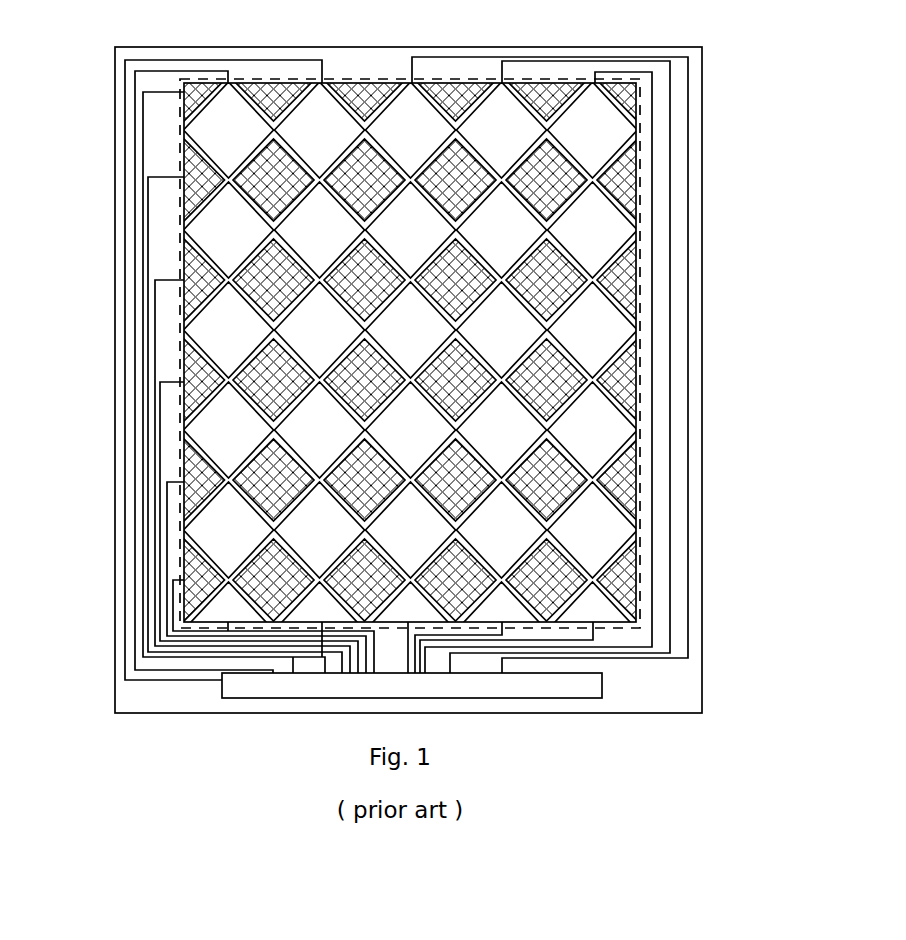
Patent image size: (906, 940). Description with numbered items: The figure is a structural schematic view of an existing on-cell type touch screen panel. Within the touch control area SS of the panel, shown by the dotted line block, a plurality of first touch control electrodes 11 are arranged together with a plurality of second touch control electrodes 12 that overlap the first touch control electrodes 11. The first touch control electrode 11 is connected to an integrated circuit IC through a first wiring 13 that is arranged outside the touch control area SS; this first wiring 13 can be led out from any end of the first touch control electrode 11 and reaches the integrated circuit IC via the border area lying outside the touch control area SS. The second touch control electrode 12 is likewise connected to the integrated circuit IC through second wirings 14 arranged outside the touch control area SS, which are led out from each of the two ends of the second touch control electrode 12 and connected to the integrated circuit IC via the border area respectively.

The first touch control electrode 11 is at (628, 178).
The second touch control electrode 12 is at (600, 343).
The first wiring 13 is at (155, 357).
The second wiring 14 is at (672, 453).
The touch control area SS is at (640, 215).
The integrated circuit IC is at (412, 685).